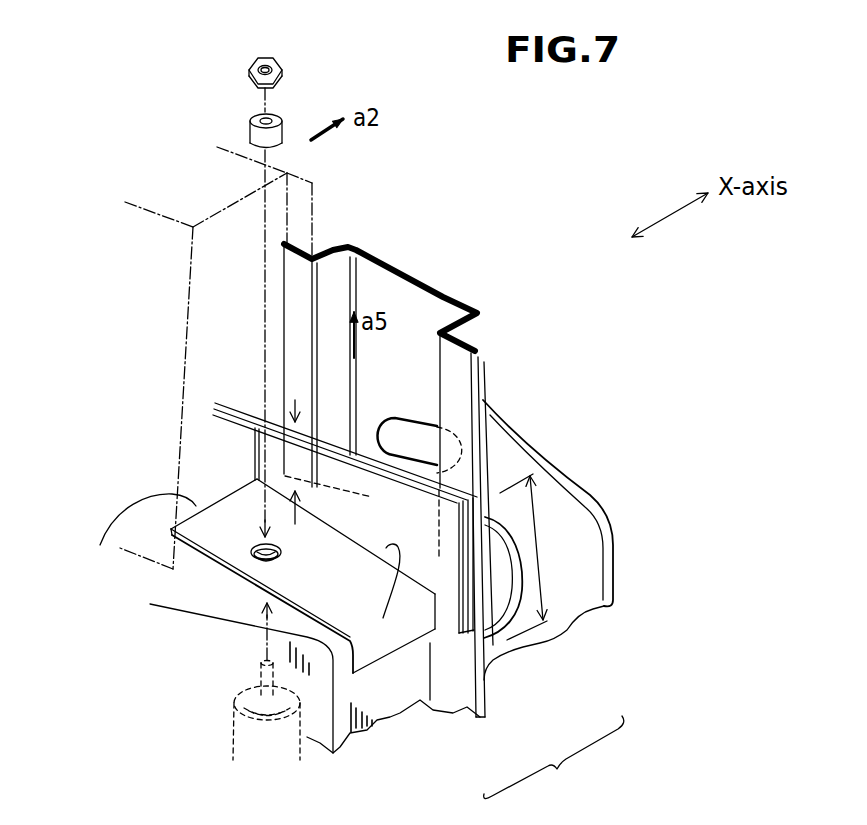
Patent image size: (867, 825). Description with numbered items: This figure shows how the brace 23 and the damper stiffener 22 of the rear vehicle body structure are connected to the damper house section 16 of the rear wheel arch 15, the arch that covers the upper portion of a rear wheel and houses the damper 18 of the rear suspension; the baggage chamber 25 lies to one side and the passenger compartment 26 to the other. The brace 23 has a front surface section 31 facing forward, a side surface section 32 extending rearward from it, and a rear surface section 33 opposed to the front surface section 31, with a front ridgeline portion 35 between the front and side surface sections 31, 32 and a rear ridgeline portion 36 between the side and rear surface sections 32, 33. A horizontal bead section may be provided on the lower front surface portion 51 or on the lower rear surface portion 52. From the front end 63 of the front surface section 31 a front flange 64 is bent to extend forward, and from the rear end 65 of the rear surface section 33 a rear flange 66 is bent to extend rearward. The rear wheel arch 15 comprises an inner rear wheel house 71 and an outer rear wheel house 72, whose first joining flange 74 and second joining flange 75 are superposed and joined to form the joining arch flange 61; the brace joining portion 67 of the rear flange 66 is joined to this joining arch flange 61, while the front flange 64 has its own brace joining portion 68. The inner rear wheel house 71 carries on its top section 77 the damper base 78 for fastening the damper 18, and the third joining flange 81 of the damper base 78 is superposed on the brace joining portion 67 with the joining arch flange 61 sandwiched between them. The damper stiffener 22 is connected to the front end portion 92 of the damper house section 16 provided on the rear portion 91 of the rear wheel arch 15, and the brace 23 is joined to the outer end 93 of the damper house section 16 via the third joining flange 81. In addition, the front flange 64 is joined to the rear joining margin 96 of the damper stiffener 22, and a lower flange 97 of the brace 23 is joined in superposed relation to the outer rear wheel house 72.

The rear wheel arch 15 is at (554, 757).
The damper house section 16 is at (242, 576).
The damper 18 is at (232, 727).
The damper stiffener 22 is at (135, 222).
The brace 23 is at (416, 264).
The baggage chamber 25 is at (62, 318).
The passenger compartment 26 is at (657, 130).
The front surface section 31 is at (331, 244).
The side surface section 32 is at (420, 352).
The rear surface section 33 is at (472, 337).
The front ridgeline portion 35 is at (352, 262).
The rear ridgeline portion 36 is at (480, 323).
The lower front surface portion 51 is at (337, 432).
The lower rear surface portion 52 is at (495, 512).
The joining arch flange 61 is at (88, 323).
The front end of the front surface section 63 is at (319, 302).
The front flange 64 is at (297, 278).
The rear end of the rear surface section 65 is at (440, 350).
The rear flange 66 is at (460, 392).
The brace joining portion 67 is at (504, 562).
The brace joining portion of the front flange 68 is at (297, 462).
The inner rear wheel house 71 is at (400, 722).
The outer rear wheel house 72 is at (563, 632).
The first joining flange 74 is at (233, 423).
The second joining flange 75 is at (247, 400).
The top section 77 is at (107, 541).
The damper base 78 is at (397, 513).
The third joining flange 81 is at (287, 633).
The rear portion of the rear wheel arch 91 is at (300, 640).
The front end portion of the damper house section 92 is at (174, 568).
The outer end of the damper house section 93 is at (389, 545).
The rear joining margin 96 is at (296, 190).
The lower flange 97 is at (518, 543).